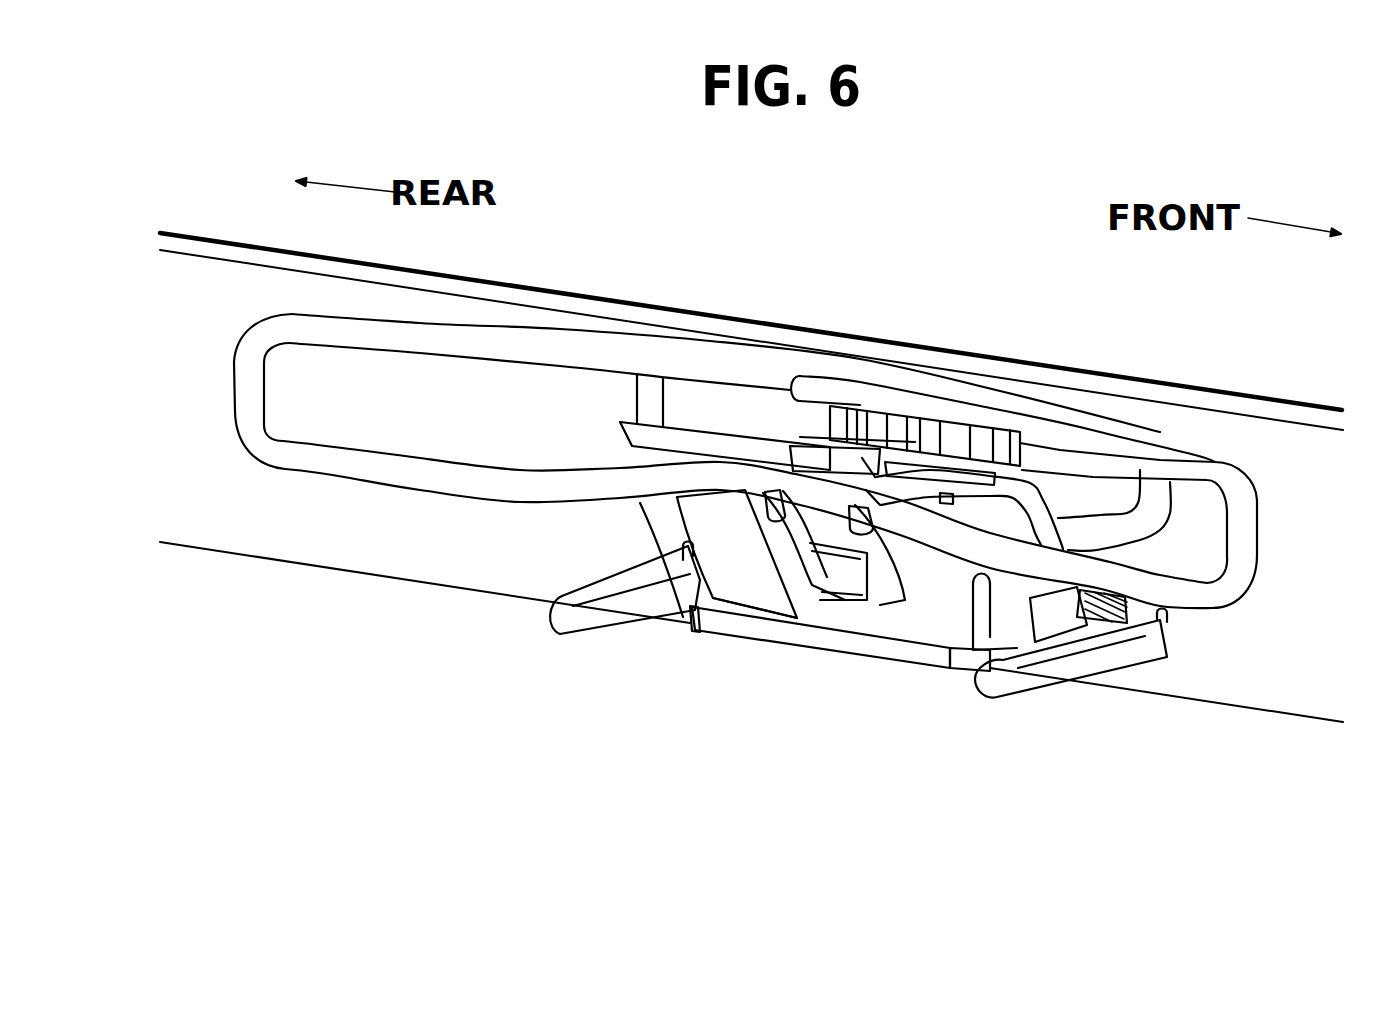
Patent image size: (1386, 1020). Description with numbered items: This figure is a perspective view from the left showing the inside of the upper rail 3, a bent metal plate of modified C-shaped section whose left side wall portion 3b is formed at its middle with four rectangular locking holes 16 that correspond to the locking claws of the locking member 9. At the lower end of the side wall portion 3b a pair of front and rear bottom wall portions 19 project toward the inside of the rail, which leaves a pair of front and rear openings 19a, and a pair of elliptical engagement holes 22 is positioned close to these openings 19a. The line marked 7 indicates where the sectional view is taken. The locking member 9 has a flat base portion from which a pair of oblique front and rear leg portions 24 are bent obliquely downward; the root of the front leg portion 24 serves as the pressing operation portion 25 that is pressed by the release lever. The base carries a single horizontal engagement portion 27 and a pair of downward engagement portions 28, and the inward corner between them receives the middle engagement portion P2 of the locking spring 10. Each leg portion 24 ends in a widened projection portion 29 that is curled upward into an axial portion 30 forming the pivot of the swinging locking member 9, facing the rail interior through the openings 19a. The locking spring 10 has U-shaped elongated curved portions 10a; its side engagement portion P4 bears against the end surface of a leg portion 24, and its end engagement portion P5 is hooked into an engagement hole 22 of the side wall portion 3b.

The upper rail 3 is at (566, 279).
The side wall portion 3b is at (200, 283).
The sectional view line (FIG. 7) 7 is at (258, 531).
The locking member 9 is at (1050, 474).
The locking spring 10 is at (650, 340).
The elongated curved portion 10a is at (345, 477).
The locking holes 16 is at (903, 437).
The bottom wall portions 19 is at (750, 608).
The openings 19a is at (893, 427).
The engagement holes 22 is at (668, 550).
The leg portions 24 is at (733, 560).
The pressing operation portion 25 is at (930, 497).
The horizontal engagement portion 27 is at (828, 455).
The downward engagement portions 28 is at (803, 522).
The projection portion 29 is at (843, 603).
The axial portion 30 is at (765, 635).
The middle engagement portion P2 is at (848, 572).
The side engagement portion P4 is at (643, 598).
The end engagement portion P5 is at (630, 583).